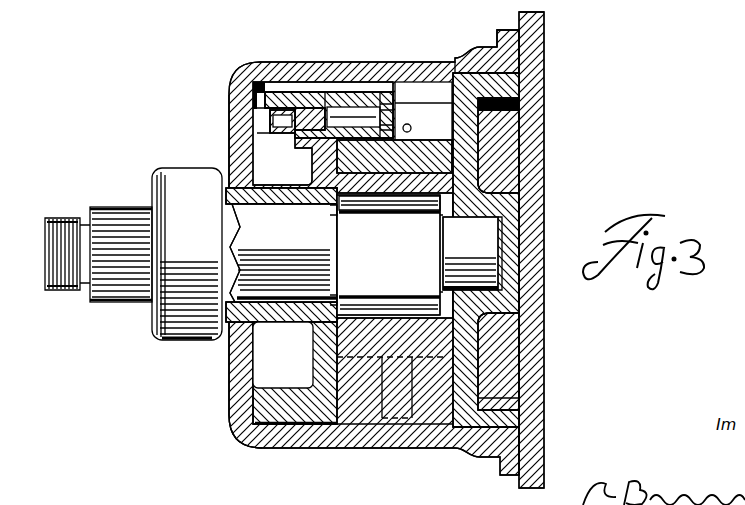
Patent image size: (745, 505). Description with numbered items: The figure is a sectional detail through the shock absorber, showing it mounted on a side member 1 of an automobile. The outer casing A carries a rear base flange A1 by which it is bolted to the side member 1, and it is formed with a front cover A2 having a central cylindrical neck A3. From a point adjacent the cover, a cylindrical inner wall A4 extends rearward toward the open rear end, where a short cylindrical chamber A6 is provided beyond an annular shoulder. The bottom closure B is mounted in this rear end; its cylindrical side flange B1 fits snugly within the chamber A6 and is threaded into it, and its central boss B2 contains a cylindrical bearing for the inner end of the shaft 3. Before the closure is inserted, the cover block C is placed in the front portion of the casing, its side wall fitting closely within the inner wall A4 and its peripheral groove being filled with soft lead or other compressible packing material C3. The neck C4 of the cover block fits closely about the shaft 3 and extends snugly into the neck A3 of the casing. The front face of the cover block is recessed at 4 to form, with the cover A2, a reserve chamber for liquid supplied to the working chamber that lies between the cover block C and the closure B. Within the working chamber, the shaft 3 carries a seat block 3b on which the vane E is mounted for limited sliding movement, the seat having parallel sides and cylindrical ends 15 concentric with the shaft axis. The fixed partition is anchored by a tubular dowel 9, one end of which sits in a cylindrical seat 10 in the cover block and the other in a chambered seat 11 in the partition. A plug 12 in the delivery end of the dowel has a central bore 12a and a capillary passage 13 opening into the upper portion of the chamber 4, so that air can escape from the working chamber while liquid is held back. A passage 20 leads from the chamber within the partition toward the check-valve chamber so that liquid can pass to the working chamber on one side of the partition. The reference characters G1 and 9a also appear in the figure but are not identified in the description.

The side member 1 is at (537, 176).
The outer casing A is at (405, 66).
The rear base flange A1 is at (502, 29).
The front cover A2 is at (240, 384).
The central cylindrical neck A3 is at (226, 201).
The cylindrical inner wall A4 is at (373, 425).
The short cylindrical chamber A6 is at (563, 15).
The bottom closure B is at (433, 100).
The cylindrical side flange B1 is at (518, 418).
The central boss B2 is at (515, 244).
The cover block C is at (317, 365).
The compressible packing material C3 is at (253, 434).
The neck C4 is at (295, 206).
The vane E is at (473, 183).
The knurled nut G1 is at (133, 254).
The shaft 3 is at (283, 253).
The seat block 3b is at (354, 310).
The recess 4 is at (283, 355).
The tubular dowel 9 is at (335, 90).
The nut 9a is at (294, 122).
The cylindrical seat 10 is at (298, 88).
The chambered seat 11 is at (362, 82).
The plug 12 is at (268, 131).
The central bore 12a is at (313, 120).
The capillary passage 13 is at (257, 119).
The cylindrical ends 15 is at (378, 206).
The passage 20 is at (409, 124).